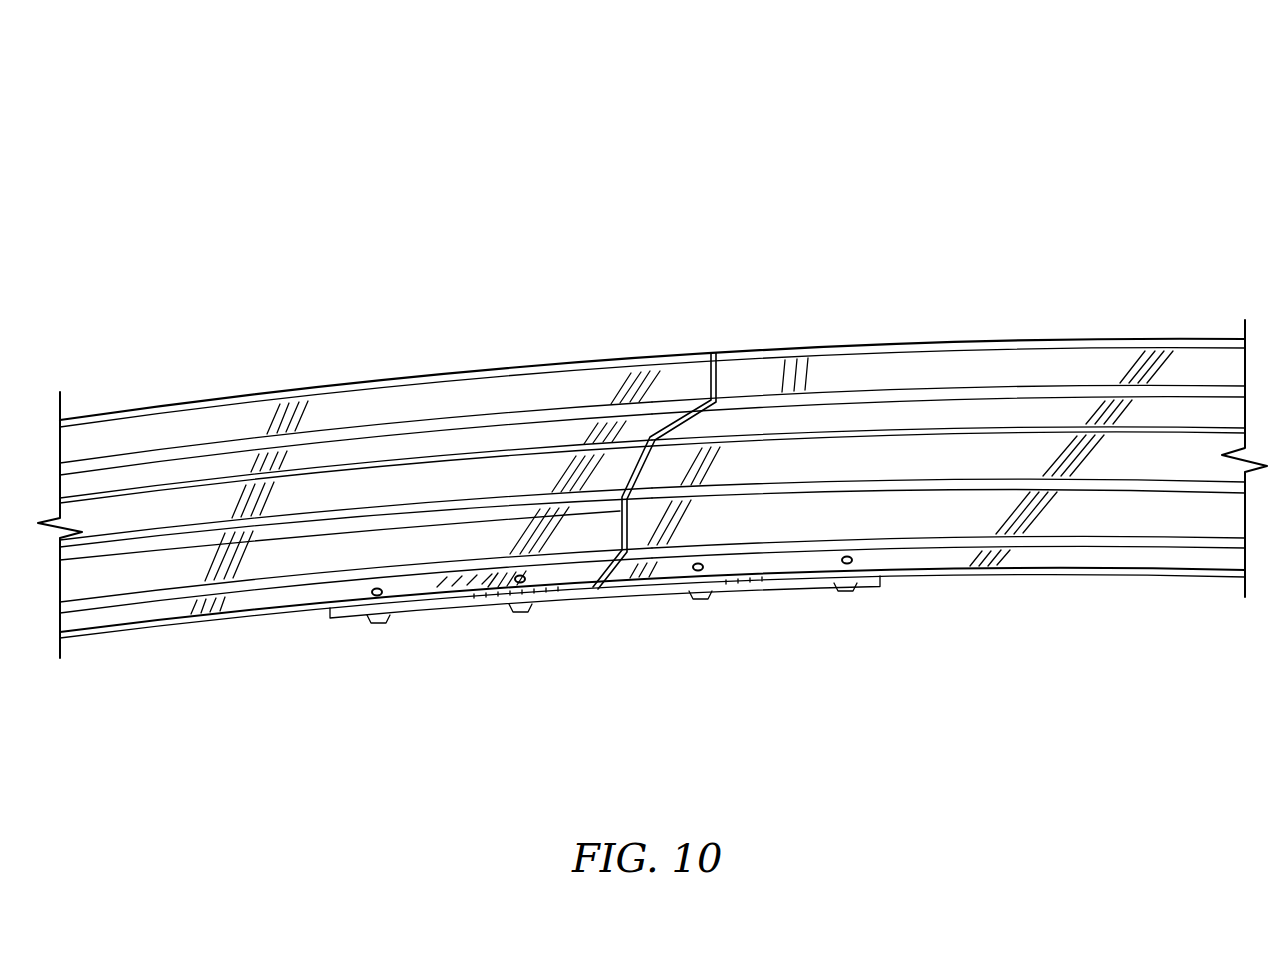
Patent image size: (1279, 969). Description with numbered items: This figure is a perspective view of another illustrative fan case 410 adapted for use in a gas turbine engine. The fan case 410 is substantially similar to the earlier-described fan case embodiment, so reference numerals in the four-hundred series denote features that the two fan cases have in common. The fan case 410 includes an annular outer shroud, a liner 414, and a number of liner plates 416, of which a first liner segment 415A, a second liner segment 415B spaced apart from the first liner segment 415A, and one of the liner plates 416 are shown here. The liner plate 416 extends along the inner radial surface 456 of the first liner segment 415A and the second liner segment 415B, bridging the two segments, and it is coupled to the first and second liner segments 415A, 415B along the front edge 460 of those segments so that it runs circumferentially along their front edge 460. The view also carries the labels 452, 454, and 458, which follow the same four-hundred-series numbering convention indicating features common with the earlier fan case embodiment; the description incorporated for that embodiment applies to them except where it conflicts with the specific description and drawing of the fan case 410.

The fan case 410 is at (994, 166).
The liner 414 is at (758, 322).
The first liner segment 415A is at (458, 348).
The second liner segment 415B is at (990, 323).
The joint 452 is at (712, 338).
The holes 454 is at (343, 598).
The inner radial surface 456 is at (418, 597).
The bottom lip 458 is at (228, 627).
The front edge 460 is at (288, 600).
The liner plate 416 is at (724, 612).